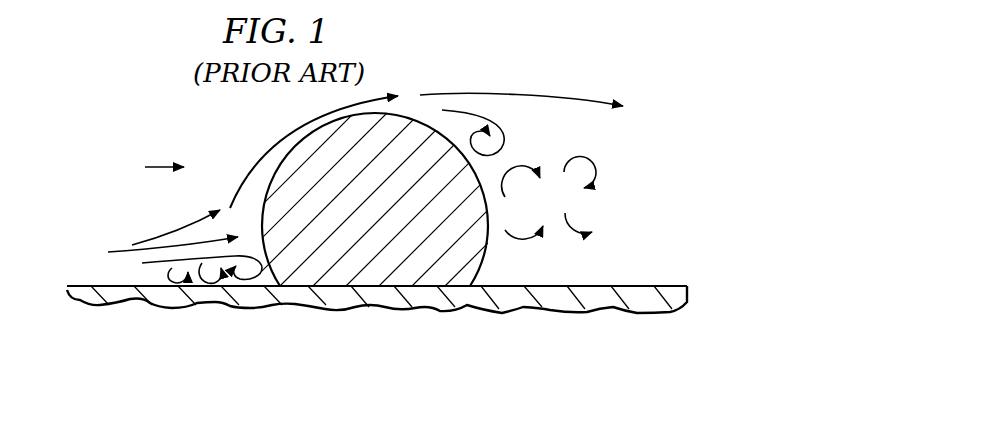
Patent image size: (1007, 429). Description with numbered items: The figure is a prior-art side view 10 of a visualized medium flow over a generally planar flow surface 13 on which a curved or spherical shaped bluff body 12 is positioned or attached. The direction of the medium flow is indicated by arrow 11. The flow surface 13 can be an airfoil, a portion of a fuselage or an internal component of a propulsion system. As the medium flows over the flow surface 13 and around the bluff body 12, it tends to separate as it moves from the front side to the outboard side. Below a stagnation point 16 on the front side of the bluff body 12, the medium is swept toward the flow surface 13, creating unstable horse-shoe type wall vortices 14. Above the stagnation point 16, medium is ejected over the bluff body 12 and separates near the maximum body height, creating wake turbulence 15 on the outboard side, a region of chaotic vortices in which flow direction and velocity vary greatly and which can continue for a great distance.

The side view 10 is at (508, 69).
The arrow 11 is at (160, 167).
The bluff body 12 is at (485, 260).
The flow surface 13 is at (640, 289).
The horse-shoe type wall vortices 14 is at (165, 318).
The wake turbulence 15 is at (612, 165).
The stagnation point 16 is at (262, 226).